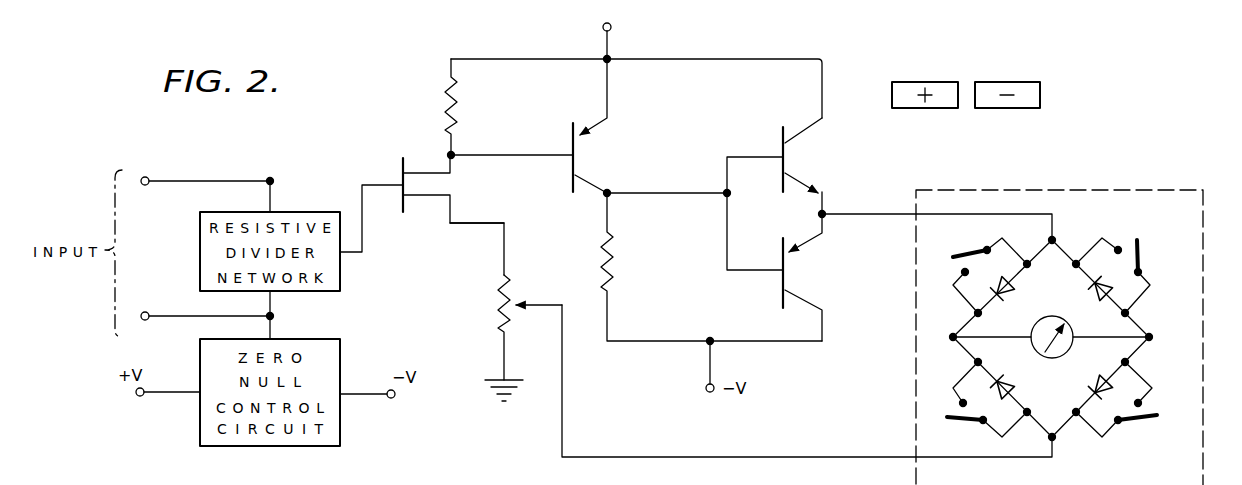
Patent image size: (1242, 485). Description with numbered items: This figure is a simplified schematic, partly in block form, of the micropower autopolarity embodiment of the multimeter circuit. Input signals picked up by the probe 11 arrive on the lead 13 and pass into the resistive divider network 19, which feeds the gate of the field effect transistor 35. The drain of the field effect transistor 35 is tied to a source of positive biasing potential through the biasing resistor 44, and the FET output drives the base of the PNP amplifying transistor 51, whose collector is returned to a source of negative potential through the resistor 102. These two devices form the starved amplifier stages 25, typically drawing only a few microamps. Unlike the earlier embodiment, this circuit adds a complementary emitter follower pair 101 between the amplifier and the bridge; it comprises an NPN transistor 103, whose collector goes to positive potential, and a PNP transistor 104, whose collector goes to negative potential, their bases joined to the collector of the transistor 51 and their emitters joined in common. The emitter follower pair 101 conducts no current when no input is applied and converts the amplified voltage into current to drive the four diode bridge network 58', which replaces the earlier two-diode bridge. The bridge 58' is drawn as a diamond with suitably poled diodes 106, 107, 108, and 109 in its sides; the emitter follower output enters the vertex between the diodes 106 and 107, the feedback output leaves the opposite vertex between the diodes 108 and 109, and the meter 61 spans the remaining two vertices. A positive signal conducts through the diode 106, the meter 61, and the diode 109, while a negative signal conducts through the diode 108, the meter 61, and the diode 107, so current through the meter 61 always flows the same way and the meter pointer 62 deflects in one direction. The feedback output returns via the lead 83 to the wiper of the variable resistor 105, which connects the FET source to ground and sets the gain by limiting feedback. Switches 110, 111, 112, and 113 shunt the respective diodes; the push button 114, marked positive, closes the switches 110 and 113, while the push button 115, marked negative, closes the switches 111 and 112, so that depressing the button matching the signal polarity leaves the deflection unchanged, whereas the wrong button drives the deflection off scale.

The probe 11 is at (150, 176).
The lead 13 is at (200, 181).
The resistive divider network 19 is at (340, 271).
The amplifier stage 25 is at (553, 94).
The field effect transistor 35 is at (407, 153).
The biasing resistor 44 is at (460, 110).
The amplifying transistor 51 is at (594, 149).
The lead 83 is at (483, 226).
The complementary emitter follower pair 101 is at (753, 138).
The resistor 102 is at (612, 250).
The NPN transistor 103 is at (800, 152).
The PNP transistor 104 is at (798, 268).
The variable resistor 105 is at (500, 310).
The diode 106 is at (1012, 298).
The diode 107 is at (1095, 300).
The diode 108 is at (1019, 361).
The diode 109 is at (1112, 372).
The switch 110 is at (973, 246).
The switch 111 is at (1148, 250).
The switch 112 is at (955, 425).
The switch 113 is at (1143, 428).
The push button 114 is at (905, 80).
The push button 115 is at (1005, 80).
The four diode bridge network 58' is at (1059, 311).
The meter 61 is at (1031, 326).
The meter pointer 62 is at (1052, 358).